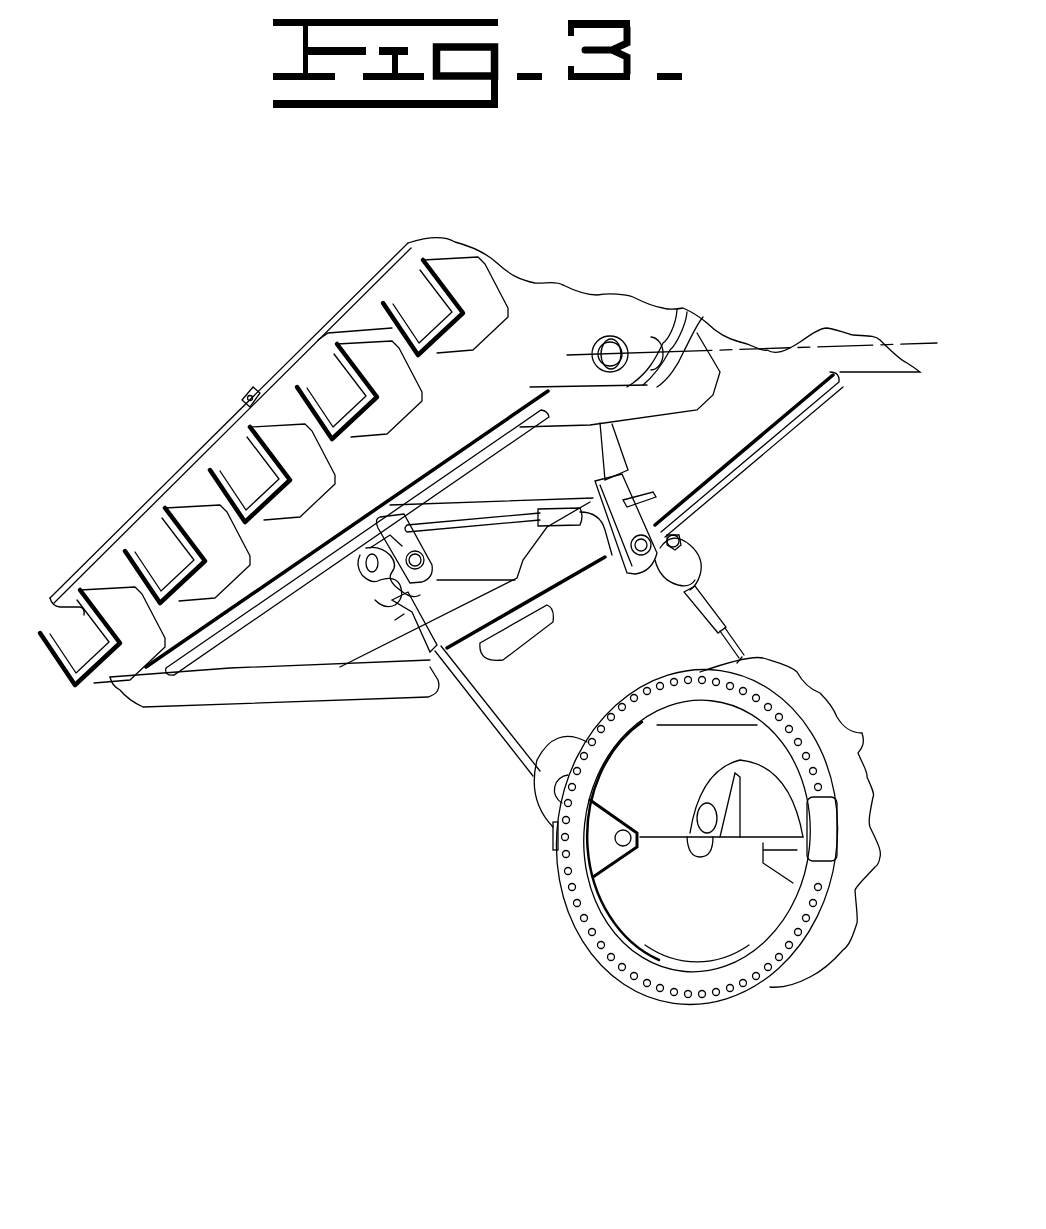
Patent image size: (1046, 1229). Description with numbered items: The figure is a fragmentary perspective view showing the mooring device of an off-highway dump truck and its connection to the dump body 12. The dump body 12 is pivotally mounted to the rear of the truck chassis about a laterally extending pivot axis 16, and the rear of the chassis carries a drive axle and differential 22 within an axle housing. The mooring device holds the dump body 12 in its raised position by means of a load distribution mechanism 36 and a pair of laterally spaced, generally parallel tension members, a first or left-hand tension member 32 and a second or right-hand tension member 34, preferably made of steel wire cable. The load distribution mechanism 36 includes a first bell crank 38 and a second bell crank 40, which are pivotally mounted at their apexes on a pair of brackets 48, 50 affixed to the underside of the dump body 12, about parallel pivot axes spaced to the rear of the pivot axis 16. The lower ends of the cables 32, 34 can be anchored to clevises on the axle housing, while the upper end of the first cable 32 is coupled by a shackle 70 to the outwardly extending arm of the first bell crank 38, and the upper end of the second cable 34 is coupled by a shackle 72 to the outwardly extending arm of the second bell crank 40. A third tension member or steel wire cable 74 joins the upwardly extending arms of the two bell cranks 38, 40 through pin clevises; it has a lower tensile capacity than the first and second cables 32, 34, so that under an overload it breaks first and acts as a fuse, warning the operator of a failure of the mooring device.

The dump body 12 is at (178, 466).
The pivot axis 16 is at (586, 345).
The drive axle and differential 22 is at (592, 957).
The first tension member 32 is at (740, 647).
The second tension member 34 is at (497, 728).
The load distribution mechanism 36 is at (675, 522).
The first bell crank 38 is at (620, 567).
The second bell crank 40 is at (360, 557).
The bracket 48 is at (630, 488).
The bracket 50 is at (393, 527).
The shackle 70 is at (690, 545).
The shackle 72 is at (365, 594).
The third tension member 74 is at (495, 512).